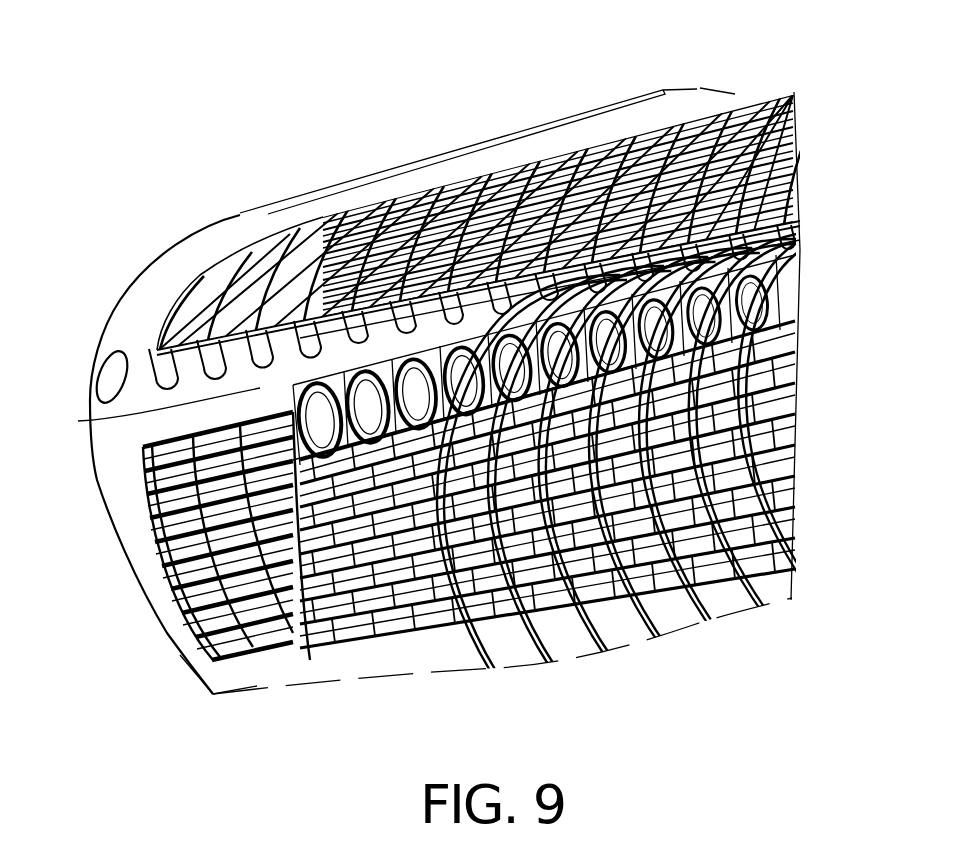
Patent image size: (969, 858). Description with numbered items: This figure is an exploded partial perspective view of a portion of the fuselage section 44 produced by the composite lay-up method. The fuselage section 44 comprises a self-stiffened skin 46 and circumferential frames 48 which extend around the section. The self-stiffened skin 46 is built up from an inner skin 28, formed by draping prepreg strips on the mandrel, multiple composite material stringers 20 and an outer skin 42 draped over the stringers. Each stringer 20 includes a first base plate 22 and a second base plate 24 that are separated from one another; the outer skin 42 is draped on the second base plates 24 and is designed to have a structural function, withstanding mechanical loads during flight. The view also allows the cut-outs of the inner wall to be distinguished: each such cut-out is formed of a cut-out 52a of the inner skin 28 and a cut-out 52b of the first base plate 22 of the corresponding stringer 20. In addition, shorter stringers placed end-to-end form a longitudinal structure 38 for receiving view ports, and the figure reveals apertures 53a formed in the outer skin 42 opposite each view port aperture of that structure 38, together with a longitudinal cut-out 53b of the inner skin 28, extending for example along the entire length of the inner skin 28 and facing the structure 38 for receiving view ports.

The composite material stringer 20 is at (180, 610).
The first base plate 22 is at (180, 473).
The second base plate 24 is at (380, 203).
The inner skin 28 is at (310, 675).
The longitudinal structure for receiving view ports 38 is at (290, 393).
The outer skin 42 is at (168, 243).
The fuselage section 44 is at (549, 100).
The self-stiffened skin 46 is at (273, 188).
The circumferential frame 48 is at (497, 635).
The cut-out of inner skin 52a is at (308, 673).
The cut-out of first base plate 52b is at (207, 650).
The aperture in outer skin 53a is at (100, 350).
The longitudinal cut-out of inner skin 53b is at (145, 411).